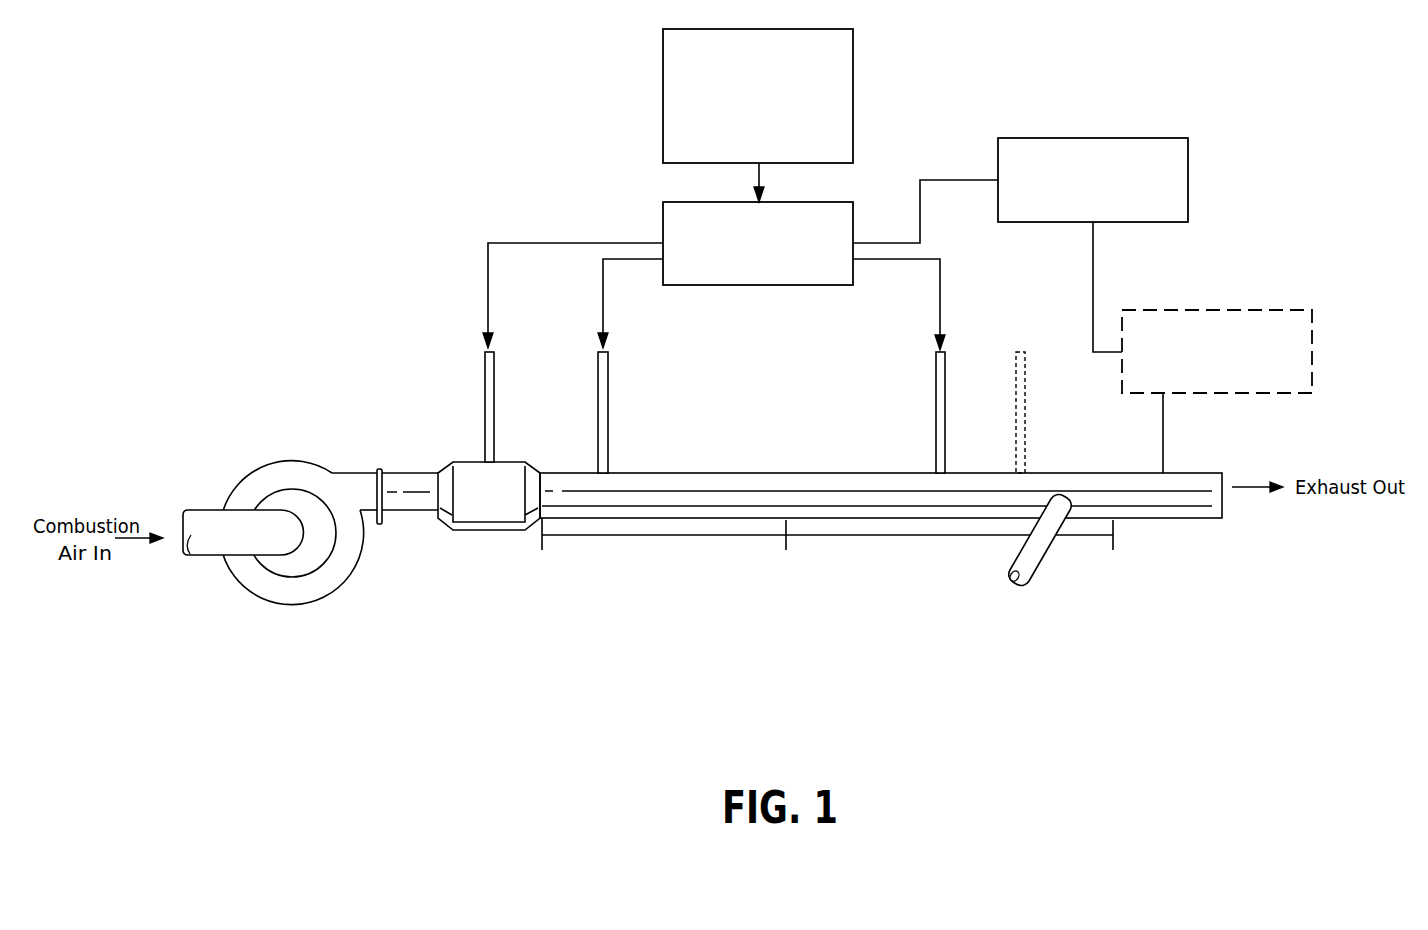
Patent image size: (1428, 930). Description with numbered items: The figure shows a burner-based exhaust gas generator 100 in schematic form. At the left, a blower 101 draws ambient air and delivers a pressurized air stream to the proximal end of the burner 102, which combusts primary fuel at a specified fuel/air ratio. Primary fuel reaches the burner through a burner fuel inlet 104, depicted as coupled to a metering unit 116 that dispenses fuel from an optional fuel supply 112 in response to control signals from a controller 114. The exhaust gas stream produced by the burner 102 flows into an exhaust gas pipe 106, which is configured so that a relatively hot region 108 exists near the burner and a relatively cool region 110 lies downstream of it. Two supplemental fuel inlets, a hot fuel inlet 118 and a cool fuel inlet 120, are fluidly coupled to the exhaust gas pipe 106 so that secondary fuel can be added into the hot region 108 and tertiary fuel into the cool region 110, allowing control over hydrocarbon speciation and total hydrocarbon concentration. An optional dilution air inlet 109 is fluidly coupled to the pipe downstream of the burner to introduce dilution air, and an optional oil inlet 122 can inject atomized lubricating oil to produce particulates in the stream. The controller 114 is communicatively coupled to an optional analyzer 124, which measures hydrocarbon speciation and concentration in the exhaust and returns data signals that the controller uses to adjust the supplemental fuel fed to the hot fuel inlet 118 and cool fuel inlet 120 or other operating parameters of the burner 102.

The exhaust gas generator 100 is at (185, 77).
The blower 101 is at (268, 603).
The burner 102 is at (467, 502).
The burner fuel inlet 104 is at (486, 423).
The exhaust gas pipe 106 is at (717, 490).
The hot region 108 is at (622, 537).
The dilution air inlet 109 is at (1038, 570).
The cool region 110 is at (950, 537).
The fuel supply 112 is at (758, 115).
The controller 114 is at (1020, 245).
The metering unit 116 is at (758, 243).
The hot fuel inlet 118 is at (600, 418).
The cool fuel inlet 120 is at (936, 410).
The oil inlet 122 is at (1016, 415).
The analyzer 124 is at (1217, 391).